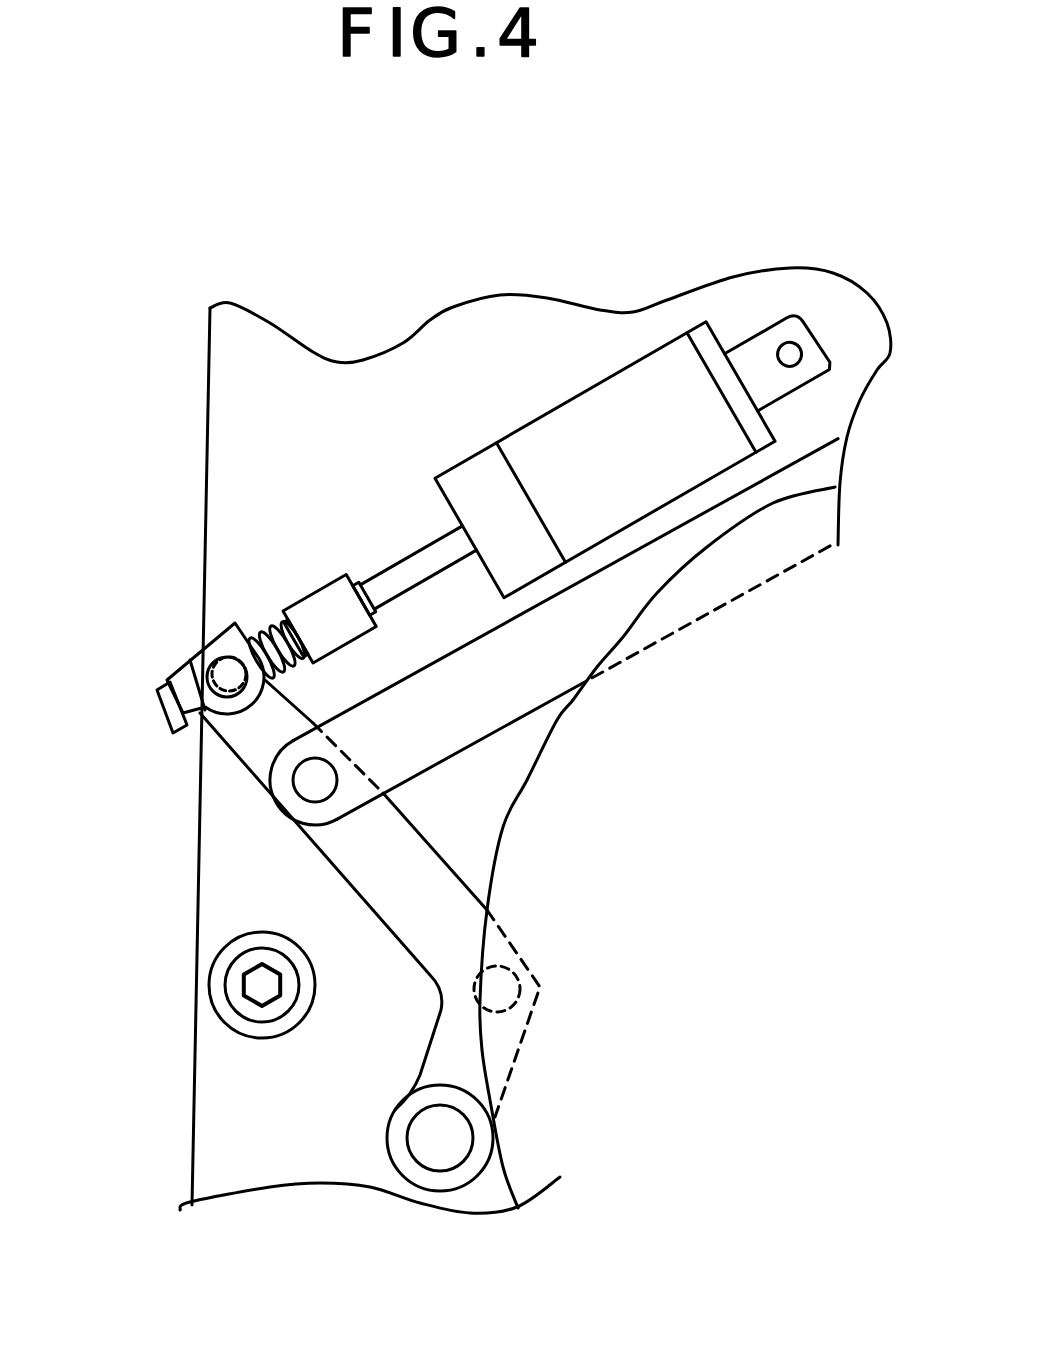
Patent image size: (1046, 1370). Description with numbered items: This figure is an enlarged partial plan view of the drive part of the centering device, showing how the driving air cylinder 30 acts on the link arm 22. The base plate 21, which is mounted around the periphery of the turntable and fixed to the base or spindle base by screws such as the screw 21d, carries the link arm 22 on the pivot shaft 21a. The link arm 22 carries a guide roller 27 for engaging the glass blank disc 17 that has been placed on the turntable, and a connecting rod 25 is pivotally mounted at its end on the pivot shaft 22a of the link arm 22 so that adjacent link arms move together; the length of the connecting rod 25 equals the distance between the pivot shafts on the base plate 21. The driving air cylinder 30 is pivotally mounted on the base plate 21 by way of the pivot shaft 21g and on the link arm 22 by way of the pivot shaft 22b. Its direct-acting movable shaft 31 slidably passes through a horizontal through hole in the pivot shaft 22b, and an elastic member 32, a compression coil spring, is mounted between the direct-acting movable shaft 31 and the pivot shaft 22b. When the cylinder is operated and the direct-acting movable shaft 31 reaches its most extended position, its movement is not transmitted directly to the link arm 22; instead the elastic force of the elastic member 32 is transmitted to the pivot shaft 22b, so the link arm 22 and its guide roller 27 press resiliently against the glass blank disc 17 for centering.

The glass blank disc 17 is at (500, 826).
The base plate 21 is at (223, 423).
The pivot shaft 21a is at (518, 992).
The screw 21d is at (247, 1010).
The pivot shaft 21g is at (786, 342).
The link arm 22 is at (247, 740).
The pivot shaft 22a is at (293, 803).
The pivot shaft 22b is at (222, 660).
The connecting rod 25 is at (570, 650).
The guide roller 27 is at (463, 1148).
The driving air cylinder 30 is at (567, 420).
The direct-acting movable shaft 31 is at (433, 549).
The elastic member 32 is at (262, 628).